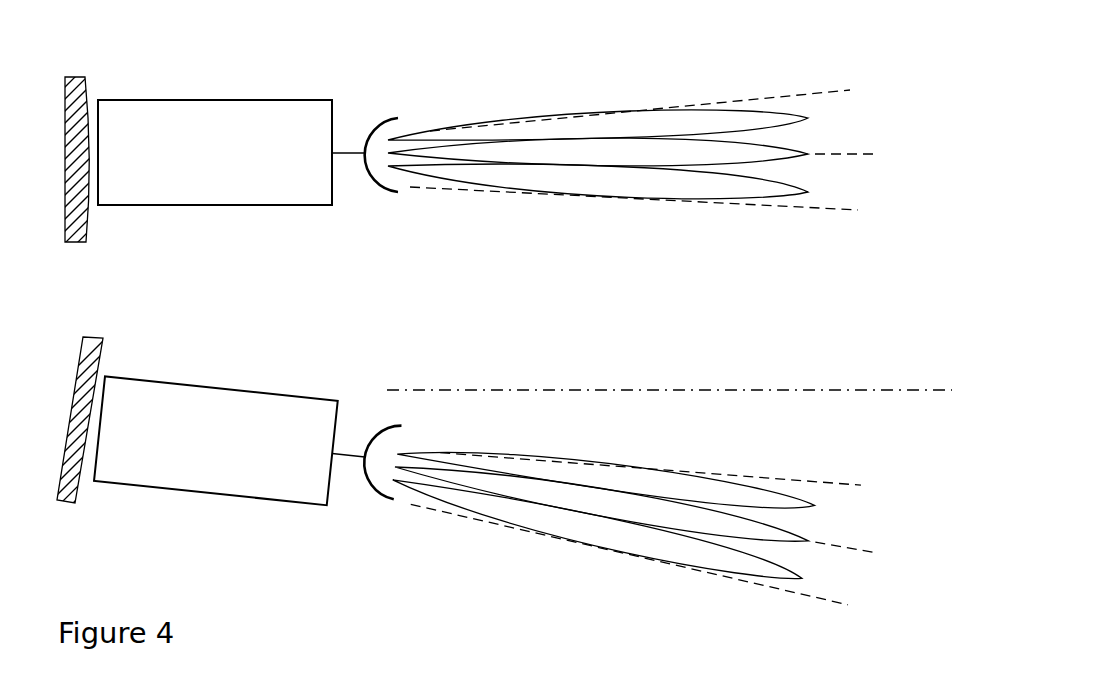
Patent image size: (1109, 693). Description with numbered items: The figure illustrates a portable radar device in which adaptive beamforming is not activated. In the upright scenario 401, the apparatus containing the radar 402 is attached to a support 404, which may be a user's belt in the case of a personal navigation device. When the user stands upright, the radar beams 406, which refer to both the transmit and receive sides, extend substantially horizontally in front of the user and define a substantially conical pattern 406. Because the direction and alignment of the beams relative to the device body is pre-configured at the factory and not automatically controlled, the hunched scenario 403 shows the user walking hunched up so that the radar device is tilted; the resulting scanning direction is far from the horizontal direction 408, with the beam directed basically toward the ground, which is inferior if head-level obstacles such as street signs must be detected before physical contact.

The upright scenario 401 is at (88, 52).
The radar 402 is at (328, 123).
The hunched scenario 403 is at (97, 303).
The support 404 is at (85, 74).
The radar beam 406 is at (648, 107).
The horizontal direction 408 is at (735, 390).